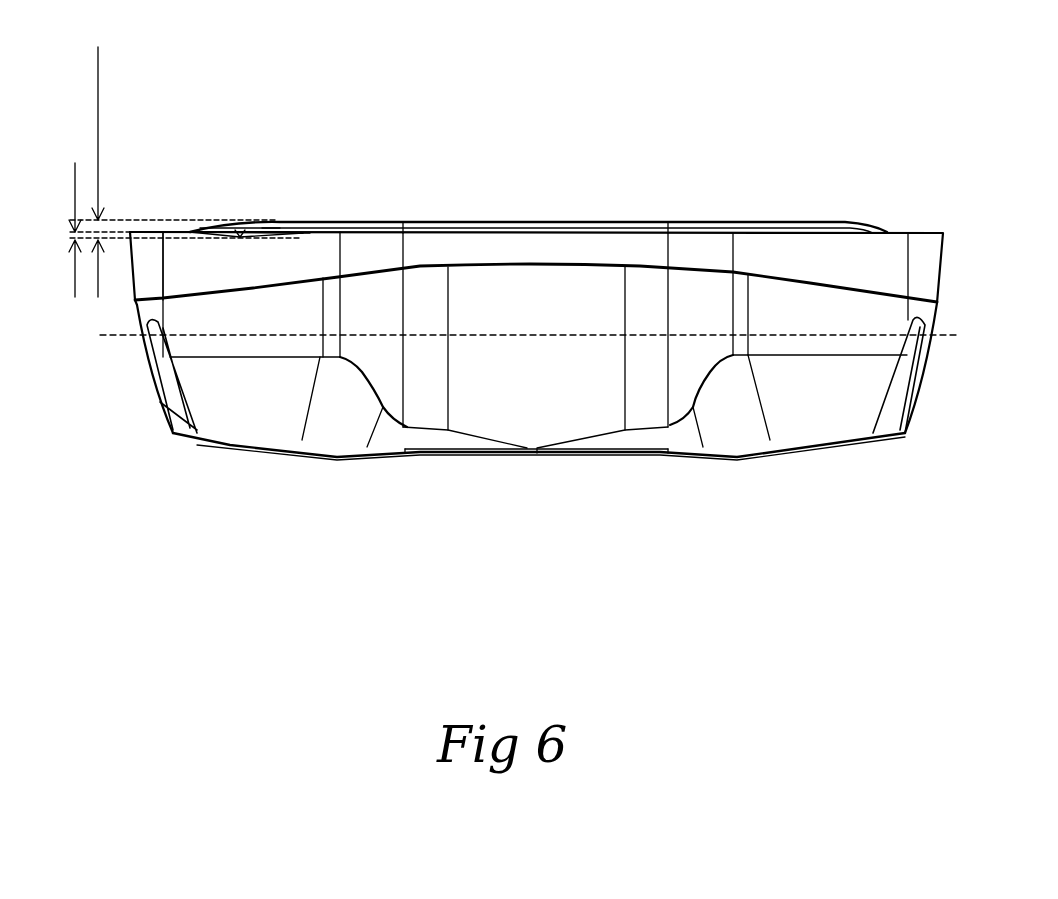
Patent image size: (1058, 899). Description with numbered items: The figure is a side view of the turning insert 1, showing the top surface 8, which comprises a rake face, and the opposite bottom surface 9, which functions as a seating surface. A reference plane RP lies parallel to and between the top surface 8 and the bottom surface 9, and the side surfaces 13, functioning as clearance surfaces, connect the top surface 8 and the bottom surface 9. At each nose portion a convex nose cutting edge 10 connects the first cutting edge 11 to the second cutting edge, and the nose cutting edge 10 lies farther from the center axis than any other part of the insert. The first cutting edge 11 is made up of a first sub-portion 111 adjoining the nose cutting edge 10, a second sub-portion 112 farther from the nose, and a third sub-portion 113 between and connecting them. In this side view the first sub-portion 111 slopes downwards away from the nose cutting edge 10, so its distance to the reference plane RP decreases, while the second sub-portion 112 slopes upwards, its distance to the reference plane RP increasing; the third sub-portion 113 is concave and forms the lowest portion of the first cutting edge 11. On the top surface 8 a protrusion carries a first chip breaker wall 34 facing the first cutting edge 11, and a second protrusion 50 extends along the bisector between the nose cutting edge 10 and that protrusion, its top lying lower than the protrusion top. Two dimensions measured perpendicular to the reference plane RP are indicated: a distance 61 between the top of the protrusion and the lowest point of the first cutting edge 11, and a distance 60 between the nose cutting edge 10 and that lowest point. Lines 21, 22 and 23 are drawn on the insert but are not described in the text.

The turning insert 1 is at (660, 151).
The top surface 8 is at (468, 218).
The bottom surface 9 is at (482, 457).
The nose cutting edge 10 is at (143, 232).
The first cutting edge 11 is at (412, 135).
The first sub-portion 111 is at (188, 232).
The second sub-portion 112 is at (303, 233).
The third sub-portion 113 is at (240, 237).
The side surfaces 13 is at (535, 340).
The upper character line 21 is at (536, 281).
The middle panel portion 22 is at (538, 333).
The lower panel portion 23 is at (510, 401).
The first chip breaker wall 34 is at (270, 228).
The second protrusion 50 is at (165, 232).
The distance 60 is at (171, 230).
The distance 61 is at (172, 172).
The reference plane RP is at (506, 336).